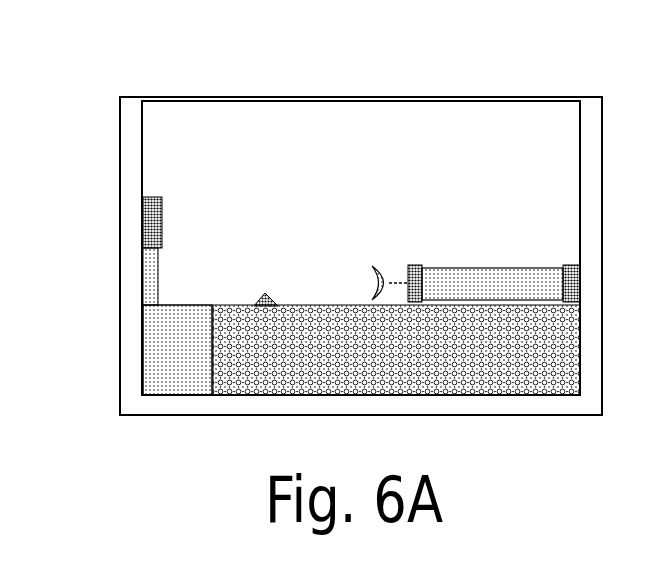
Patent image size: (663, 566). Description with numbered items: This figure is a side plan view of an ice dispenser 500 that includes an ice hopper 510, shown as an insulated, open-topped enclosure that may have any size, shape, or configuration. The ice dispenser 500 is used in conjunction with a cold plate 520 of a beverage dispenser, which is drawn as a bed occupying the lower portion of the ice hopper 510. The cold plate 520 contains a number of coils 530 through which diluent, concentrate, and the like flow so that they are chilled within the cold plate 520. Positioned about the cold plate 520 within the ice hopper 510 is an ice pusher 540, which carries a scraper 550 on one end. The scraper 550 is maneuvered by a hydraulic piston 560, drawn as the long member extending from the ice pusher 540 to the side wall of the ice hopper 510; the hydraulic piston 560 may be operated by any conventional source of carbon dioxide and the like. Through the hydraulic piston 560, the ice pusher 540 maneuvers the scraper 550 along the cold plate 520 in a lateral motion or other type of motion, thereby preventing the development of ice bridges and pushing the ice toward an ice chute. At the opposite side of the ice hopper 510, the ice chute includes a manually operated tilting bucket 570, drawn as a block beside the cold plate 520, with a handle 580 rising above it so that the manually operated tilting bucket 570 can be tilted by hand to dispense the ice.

The ice dispenser 500 is at (200, 60).
The ice hopper 510 is at (128, 146).
The cold plate 520 is at (328, 305).
The coils 530 is at (265, 297).
The ice pusher 540 is at (452, 263).
The scraper 550 is at (373, 272).
The hydraulic piston 560 is at (501, 283).
The manually operated tilting bucket 570 is at (177, 350).
The handle 580 is at (163, 222).